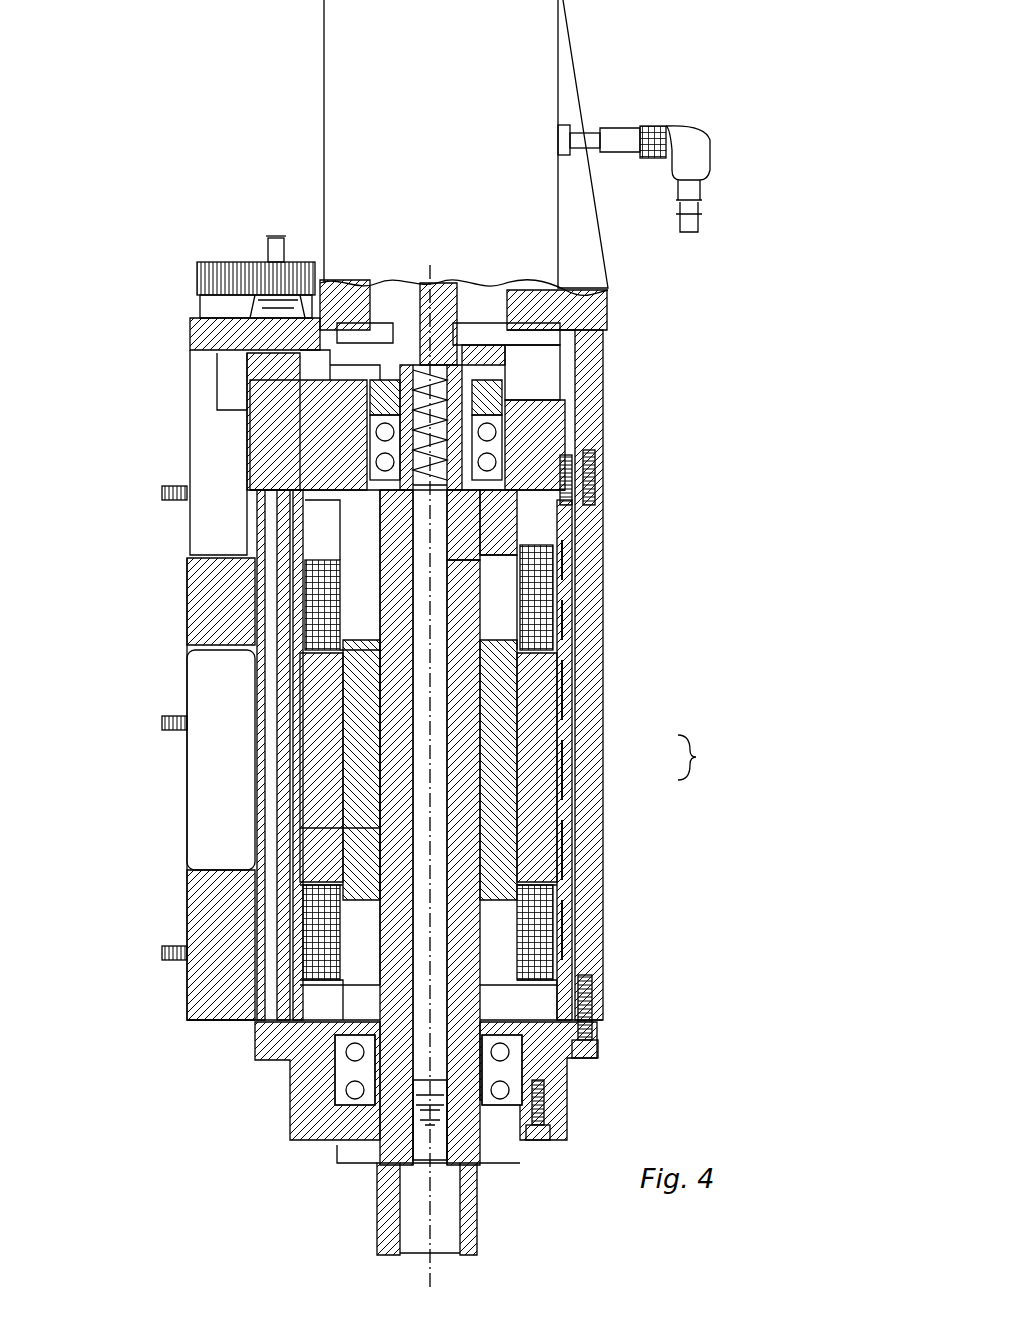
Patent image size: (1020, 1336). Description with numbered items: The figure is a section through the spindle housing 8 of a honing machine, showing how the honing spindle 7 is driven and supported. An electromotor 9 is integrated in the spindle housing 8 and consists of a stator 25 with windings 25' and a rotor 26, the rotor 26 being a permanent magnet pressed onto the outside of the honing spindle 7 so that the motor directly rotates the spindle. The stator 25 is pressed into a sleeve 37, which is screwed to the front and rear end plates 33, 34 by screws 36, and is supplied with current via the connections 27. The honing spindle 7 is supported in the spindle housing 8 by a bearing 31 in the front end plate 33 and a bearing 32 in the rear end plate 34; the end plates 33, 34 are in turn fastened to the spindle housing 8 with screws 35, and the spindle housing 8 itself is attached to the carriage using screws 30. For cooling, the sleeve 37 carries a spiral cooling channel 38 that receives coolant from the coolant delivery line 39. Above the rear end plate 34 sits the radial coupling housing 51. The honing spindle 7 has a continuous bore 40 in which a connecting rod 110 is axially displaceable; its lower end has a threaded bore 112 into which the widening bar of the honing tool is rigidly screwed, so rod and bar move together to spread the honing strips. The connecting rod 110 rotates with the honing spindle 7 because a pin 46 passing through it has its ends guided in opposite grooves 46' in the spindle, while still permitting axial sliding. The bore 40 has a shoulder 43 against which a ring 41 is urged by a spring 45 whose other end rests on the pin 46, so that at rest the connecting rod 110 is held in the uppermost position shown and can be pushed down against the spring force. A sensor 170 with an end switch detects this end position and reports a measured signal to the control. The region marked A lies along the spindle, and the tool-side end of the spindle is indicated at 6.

The sensor 170 is at (626, 136).
The radial coupling housing 51 is at (347, 283).
The coolant delivery line 39 is at (272, 258).
The pin 46 is at (422, 353).
The grooves 46' is at (492, 525).
The connecting rod 110 is at (470, 300).
The spring 45 is at (548, 392).
The rear end plate 34 is at (503, 420).
The bearing 32 is at (562, 428).
The screws 35 is at (592, 474).
The screws 36 is at (566, 490).
The connections 27 is at (300, 531).
The screws 30 is at (170, 500).
The ring 41 is at (343, 570).
The shoulder 43 is at (478, 552).
The spiral cooling channel 38 is at (570, 592).
The windings 25' is at (596, 599).
The bore 40 is at (413, 687).
The spindle housing 8 is at (590, 698).
The stator 25 is at (483, 767).
The rotor 26 is at (530, 764).
The electromotor 9 is at (697, 757).
The sleeve 37 is at (562, 822).
The honing spindle 7 is at (582, 946).
The bearing 31 is at (325, 1096).
The front end plate 33 is at (565, 1060).
The tool holder 6 is at (382, 1200).
The bore 112 is at (478, 1168).
The axis A is at (425, 828).